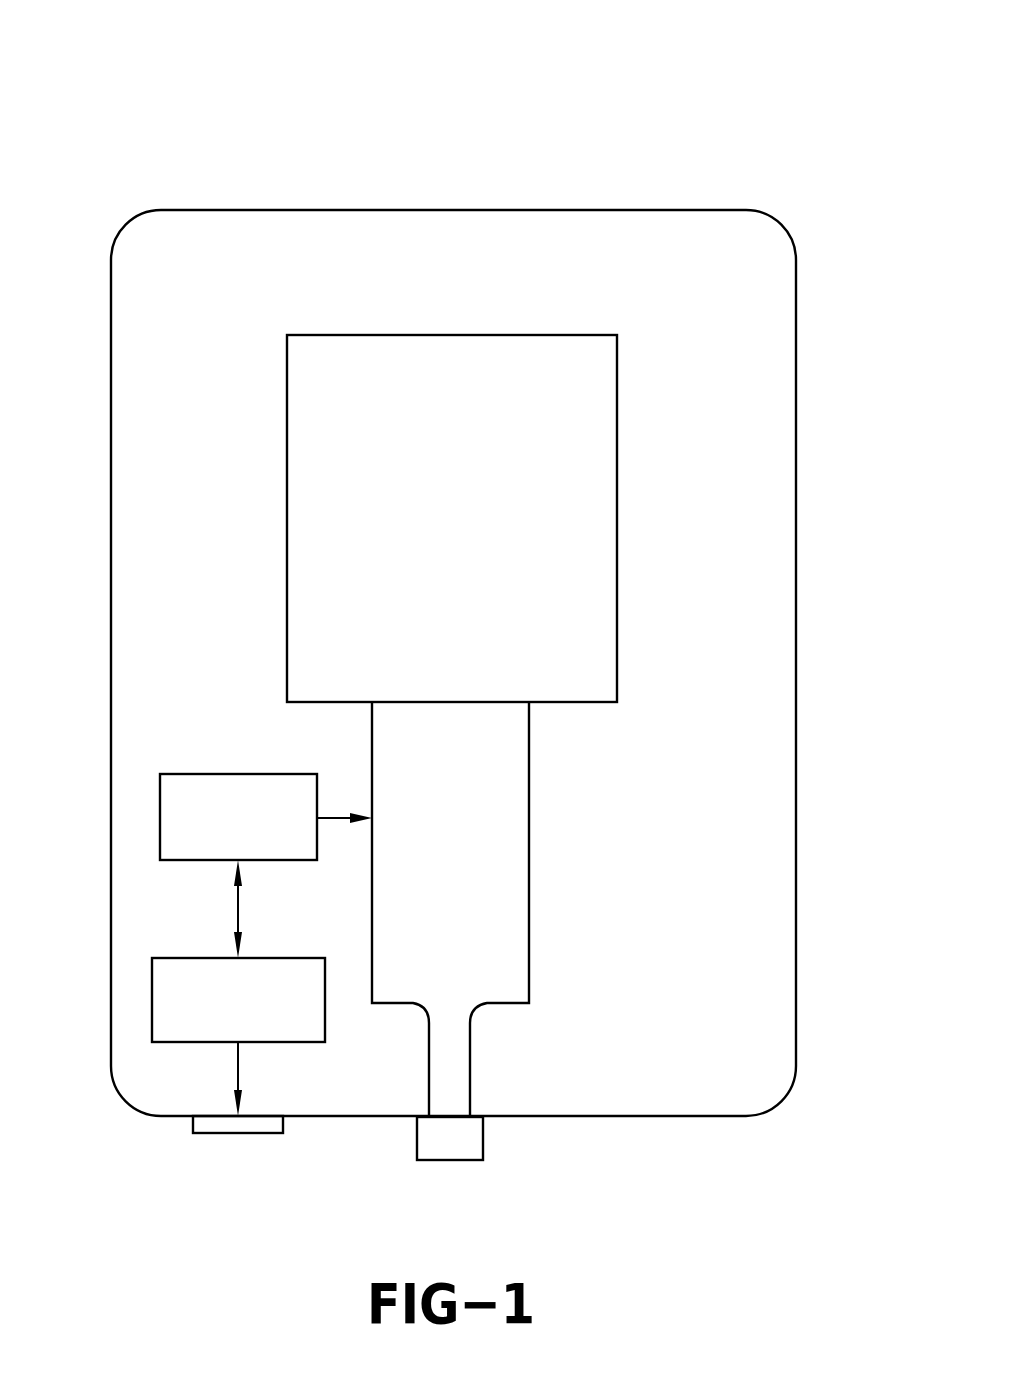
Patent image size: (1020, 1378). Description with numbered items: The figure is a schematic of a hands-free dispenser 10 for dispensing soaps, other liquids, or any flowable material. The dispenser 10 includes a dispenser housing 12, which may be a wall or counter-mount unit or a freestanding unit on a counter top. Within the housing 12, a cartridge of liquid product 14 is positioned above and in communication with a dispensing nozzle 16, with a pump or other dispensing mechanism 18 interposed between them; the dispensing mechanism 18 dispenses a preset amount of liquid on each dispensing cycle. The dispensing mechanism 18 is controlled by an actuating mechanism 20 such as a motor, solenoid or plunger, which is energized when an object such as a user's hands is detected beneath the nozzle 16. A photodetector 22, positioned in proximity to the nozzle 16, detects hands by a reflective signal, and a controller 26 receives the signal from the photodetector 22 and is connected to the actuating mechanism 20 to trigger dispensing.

The dispenser 10 is at (803, 124).
The dispenser housing 12 is at (796, 605).
The cartridge of liquid product 14 is at (468, 533).
The dispensing nozzle 16 is at (468, 1160).
The dispensing mechanism 18 is at (507, 818).
The actuating mechanism 20 is at (160, 815).
The photodetector 22 is at (223, 1133).
The controller 26 is at (152, 993).